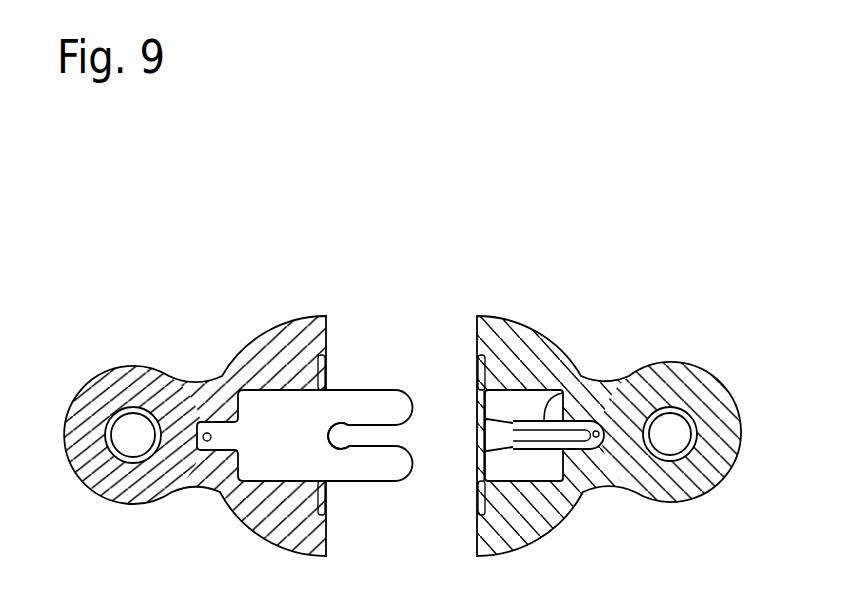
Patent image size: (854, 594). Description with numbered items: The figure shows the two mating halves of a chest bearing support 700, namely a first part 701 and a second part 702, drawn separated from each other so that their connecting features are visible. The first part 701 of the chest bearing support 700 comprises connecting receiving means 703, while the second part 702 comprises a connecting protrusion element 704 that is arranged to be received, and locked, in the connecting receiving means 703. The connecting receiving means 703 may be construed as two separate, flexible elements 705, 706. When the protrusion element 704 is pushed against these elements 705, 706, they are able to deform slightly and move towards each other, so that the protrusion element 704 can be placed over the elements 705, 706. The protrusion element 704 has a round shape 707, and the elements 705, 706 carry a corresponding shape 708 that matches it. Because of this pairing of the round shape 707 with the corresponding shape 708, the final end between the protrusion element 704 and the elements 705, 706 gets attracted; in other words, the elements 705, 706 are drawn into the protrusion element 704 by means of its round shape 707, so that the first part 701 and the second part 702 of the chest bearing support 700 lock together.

The chest bearing support 700 is at (417, 285).
The first part 701 is at (584, 308).
The second part 702 is at (212, 335).
The connecting receiving means 703 is at (565, 393).
The connecting protrusion element 704 is at (345, 405).
The flexible element 705 is at (497, 420).
The flexible element 706 is at (492, 447).
The round shape 707 is at (349, 428).
The corresponding shape 708 is at (492, 452).